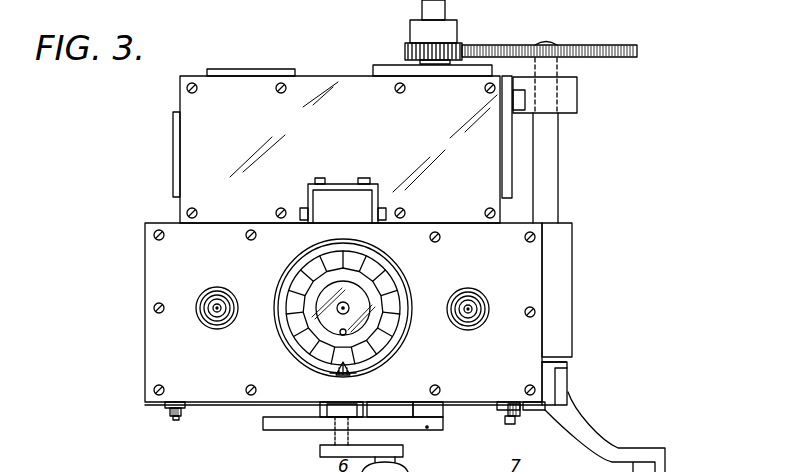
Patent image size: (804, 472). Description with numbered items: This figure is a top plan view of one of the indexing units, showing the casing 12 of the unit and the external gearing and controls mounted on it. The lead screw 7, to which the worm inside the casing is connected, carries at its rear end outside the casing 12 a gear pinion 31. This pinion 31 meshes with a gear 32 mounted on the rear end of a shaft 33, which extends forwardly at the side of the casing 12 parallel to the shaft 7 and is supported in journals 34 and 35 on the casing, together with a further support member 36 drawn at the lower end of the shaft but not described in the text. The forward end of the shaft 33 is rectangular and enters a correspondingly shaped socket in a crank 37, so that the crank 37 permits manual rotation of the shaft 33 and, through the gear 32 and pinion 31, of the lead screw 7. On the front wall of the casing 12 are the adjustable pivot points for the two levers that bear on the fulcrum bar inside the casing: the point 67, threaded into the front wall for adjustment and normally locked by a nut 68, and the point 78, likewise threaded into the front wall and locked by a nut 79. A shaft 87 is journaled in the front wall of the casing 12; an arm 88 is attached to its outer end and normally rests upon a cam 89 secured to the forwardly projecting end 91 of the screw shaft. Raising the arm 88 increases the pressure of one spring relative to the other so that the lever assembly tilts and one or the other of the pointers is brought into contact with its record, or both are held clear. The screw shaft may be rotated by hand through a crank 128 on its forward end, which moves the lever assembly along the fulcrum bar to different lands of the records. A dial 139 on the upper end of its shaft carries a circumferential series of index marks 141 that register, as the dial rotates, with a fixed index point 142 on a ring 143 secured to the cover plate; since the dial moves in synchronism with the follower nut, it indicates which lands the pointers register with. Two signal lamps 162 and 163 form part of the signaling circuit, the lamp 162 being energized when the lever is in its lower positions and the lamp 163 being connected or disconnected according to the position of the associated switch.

The lead screw 7 is at (443, 5).
The casing 12 is at (145, 280).
The gear pinion 31 is at (405, 52).
The gear 32 is at (608, 45).
The shaft 33 is at (548, 155).
The journal 34 is at (568, 298).
The journal 35 is at (578, 98).
The block 36 is at (553, 383).
The crank 37 is at (590, 447).
The point 67 is at (175, 420).
The nut 68 is at (165, 406).
The point 78 is at (513, 424).
The nut 79 is at (500, 408).
The shaft 87 is at (430, 431).
The arm 88 is at (268, 421).
The cam 89 is at (327, 421).
The forwardly projecting end of screw shaft 91 is at (335, 455).
The crank 128 is at (403, 457).
The dial 139 is at (383, 279).
The index marks 141 is at (388, 333).
The index point 142 is at (352, 374).
The ring 143 is at (285, 333).
The signal lamp 162 is at (214, 301).
The signal lamp 163 is at (467, 302).